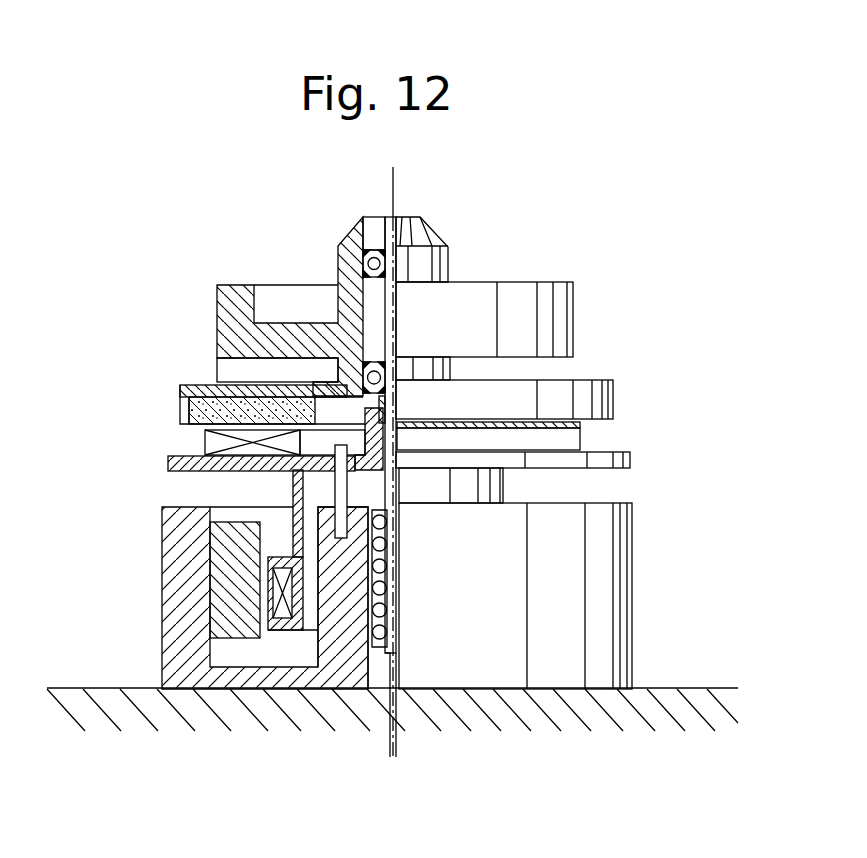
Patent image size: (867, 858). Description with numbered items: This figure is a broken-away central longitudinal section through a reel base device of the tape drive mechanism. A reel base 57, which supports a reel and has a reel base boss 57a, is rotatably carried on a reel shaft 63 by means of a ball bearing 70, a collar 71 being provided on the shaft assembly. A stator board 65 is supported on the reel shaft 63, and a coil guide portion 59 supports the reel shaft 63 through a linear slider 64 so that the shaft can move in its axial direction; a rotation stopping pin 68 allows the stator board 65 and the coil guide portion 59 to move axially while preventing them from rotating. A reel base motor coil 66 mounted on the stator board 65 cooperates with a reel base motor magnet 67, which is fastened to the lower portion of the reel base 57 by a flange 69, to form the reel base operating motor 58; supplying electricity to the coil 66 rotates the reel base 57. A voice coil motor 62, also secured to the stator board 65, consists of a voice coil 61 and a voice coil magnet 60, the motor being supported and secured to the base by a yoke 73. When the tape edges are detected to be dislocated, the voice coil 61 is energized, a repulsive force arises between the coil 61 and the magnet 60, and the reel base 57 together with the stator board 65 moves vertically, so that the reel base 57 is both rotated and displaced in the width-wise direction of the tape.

The reel base 57 is at (232, 284).
The reel base boss 57a is at (432, 232).
The reel base operating motor 58 is at (358, 400).
The coil guide portion 59 is at (325, 635).
The voice coil magnet 60 is at (215, 560).
The voice coil 61 is at (273, 598).
The voice coil motor 62 is at (183, 554).
The reel shaft 63 is at (386, 307).
The linear slider 64 is at (374, 648).
The stator board 65 is at (168, 464).
The reel base motor coil 66 is at (203, 443).
The reel base motor magnet 67 is at (182, 405).
The rotation stopping pin 68 is at (345, 493).
The flange 69 is at (197, 389).
The ball bearing 70 is at (365, 250).
The collar 71 is at (378, 404).
The yoke 73 is at (172, 638).